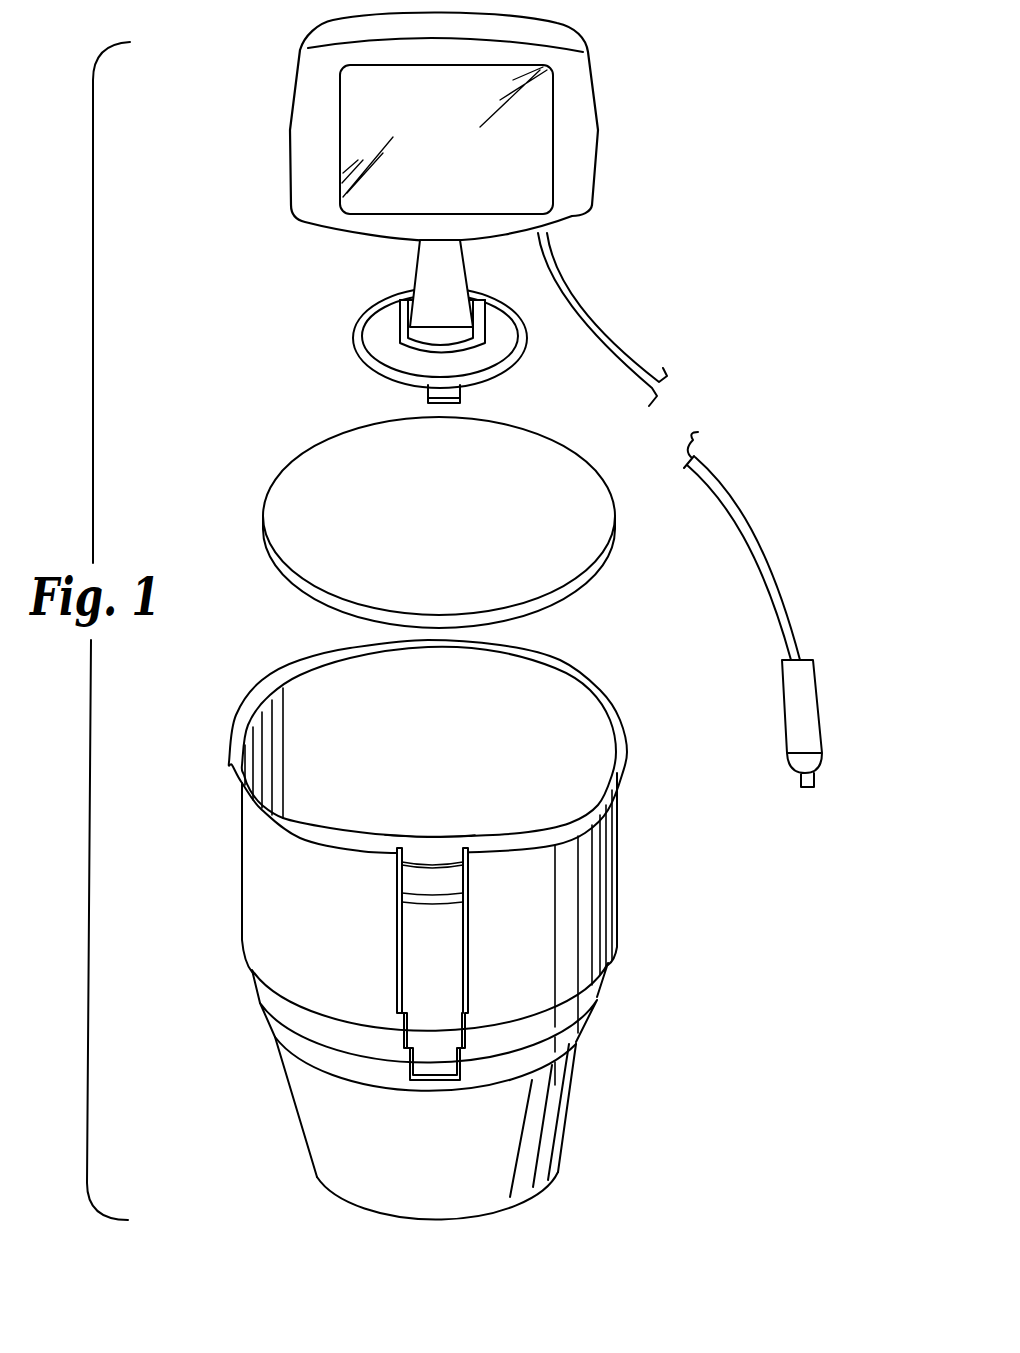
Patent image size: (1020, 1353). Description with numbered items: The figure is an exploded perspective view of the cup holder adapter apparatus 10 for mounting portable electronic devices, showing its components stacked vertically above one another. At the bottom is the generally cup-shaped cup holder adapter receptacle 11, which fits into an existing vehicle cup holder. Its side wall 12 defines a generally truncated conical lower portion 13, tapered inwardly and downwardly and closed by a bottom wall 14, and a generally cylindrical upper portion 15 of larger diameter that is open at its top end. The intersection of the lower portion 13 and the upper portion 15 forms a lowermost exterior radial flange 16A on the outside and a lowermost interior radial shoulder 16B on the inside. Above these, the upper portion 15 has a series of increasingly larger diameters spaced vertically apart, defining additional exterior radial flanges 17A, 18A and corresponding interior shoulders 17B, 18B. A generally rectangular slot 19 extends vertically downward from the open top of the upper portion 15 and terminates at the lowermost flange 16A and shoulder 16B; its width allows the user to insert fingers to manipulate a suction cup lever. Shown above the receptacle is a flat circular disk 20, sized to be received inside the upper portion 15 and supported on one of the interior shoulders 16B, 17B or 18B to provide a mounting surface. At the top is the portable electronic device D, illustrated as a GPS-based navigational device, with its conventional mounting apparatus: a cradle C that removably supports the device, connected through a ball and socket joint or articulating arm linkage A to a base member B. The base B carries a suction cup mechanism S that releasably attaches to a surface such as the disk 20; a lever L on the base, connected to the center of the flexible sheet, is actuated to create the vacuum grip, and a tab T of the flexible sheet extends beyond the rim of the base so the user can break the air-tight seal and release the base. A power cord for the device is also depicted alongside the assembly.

The portable electronic device D is at (600, 143).
The cradle C is at (436, 240).
The articulating arm linkage A is at (450, 282).
The suction cup mechanism S is at (398, 318).
The base member B is at (358, 337).
The lever L is at (473, 340).
The tab T is at (430, 389).
The flat circular disk 20 is at (456, 525).
The cup holder adapter apparatus 10 is at (658, 580).
The cup holder adapter receptacle 11 is at (617, 886).
The side wall 12 is at (243, 875).
The upper portion 15 is at (258, 915).
The slot 19 is at (415, 948).
The interior radial shoulder 18B is at (388, 830).
The interior radial shoulder 17B is at (421, 860).
The lowermost interior radial shoulder 16B is at (436, 890).
The exterior radial flange 18A is at (588, 992).
The exterior radial flange 17A is at (598, 1033).
The lowermost exterior radial flange 16A is at (578, 1068).
The lower portion 13 is at (300, 1134).
The bottom wall 14 is at (483, 1214).